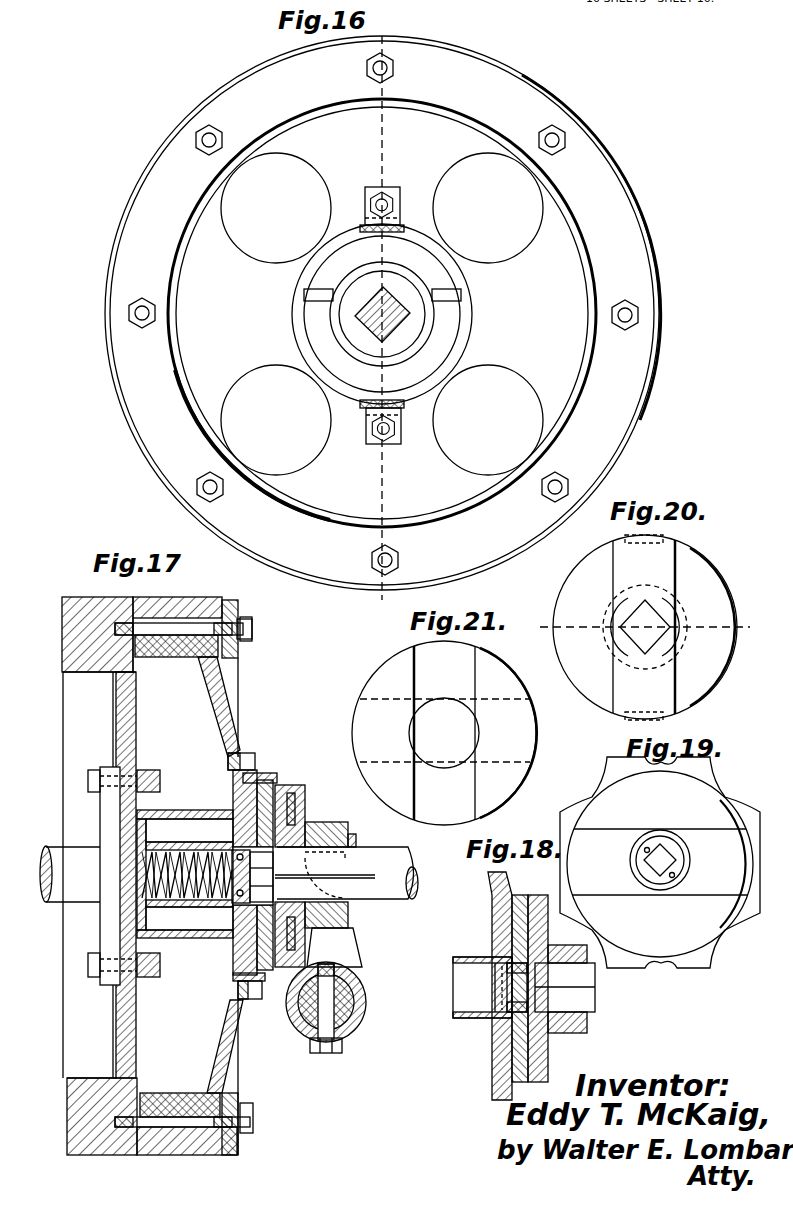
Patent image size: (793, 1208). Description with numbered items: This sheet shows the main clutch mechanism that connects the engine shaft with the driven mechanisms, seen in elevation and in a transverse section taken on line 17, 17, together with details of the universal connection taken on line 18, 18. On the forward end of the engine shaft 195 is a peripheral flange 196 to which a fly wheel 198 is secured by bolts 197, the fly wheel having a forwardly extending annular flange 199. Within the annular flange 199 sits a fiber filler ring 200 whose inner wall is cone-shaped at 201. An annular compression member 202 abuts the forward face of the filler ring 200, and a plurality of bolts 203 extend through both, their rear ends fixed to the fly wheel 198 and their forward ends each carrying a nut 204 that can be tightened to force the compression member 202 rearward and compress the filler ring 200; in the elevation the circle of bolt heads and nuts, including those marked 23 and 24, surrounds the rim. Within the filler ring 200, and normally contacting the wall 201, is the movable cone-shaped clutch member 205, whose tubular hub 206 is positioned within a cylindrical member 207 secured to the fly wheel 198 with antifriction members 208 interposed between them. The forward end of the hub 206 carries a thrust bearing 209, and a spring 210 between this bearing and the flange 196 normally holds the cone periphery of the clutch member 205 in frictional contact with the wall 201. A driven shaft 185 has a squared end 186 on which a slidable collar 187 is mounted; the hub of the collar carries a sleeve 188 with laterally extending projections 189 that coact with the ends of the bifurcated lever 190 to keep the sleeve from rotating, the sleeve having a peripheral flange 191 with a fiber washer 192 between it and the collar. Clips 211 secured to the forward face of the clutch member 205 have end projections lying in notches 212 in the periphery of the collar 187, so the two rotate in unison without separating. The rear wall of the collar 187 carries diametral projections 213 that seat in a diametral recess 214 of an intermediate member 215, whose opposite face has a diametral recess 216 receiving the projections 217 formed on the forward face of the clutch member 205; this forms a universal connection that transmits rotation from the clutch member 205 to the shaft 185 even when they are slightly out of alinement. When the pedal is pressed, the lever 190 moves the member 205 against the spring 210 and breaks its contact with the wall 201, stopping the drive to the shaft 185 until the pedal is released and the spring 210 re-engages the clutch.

In FIG. 16, the section line 17- 17 is at (377, 316).
In FIG. 20, the section line 18- 18 is at (646, 635).
In FIG. 16, the bolt 23 is at (555, 137).
In FIG. 16, the nut 24 is at (567, 139).
In FIG. 17, the shaft 185 is at (386, 882).
In FIG. 20, the shaft 185 is at (655, 633).
In FIG. 16, the squared end 186 is at (357, 322).
In FIG. 17, the squared end 186 is at (362, 856).
In FIG. 18, the squared end 186 is at (585, 1005).
In FIG. 16, the slidable collar 187 is at (283, 345).
In FIG. 17, the slidable collar 187 is at (310, 806).
In FIG. 20, the slidable collar 187 is at (720, 596).
In FIG. 18, the slidable collar 187 is at (552, 930).
In FIG. 16, the sleeve 188 is at (384, 363).
In FIG. 17, the sleeve 188 is at (312, 822).
In FIG. 16, the laterally extending projections 189 is at (318, 289).
In FIG. 17, the laterally extending projections 189 is at (352, 836).
In FIG. 18, the laterally extending projections 189 is at (570, 1032).
In FIG. 17, the bifurcated lever 190 is at (358, 952).
In FIG. 17, the peripheral flange 191 is at (292, 800).
In FIG. 17, the fiber washer 192 is at (282, 790).
In FIG. 17, the engine shaft 195 is at (60, 848).
In FIG. 17, the peripheral flange 196 is at (100, 800).
In FIG. 17, the bolts 197 is at (88, 778).
In FIG. 17, the fly wheel 198 is at (67, 1105).
In FIG. 16, the annular flange 199 is at (182, 141).
In FIG. 17, the annular flange 199 is at (196, 606).
In FIG. 17, the filler ring 200 is at (190, 1138).
In FIG. 17, the cone-shaped inner wall 201 is at (160, 628).
In FIG. 16, the annular compression member 202 is at (634, 283).
In FIG. 17, the annular compression member 202 is at (228, 648).
In FIG. 16, the bolts 203 is at (136, 317).
In FIG. 17, the bolts 203 is at (252, 632).
In FIG. 16, the nut 204 is at (126, 348).
In FIG. 17, the nut 204 is at (244, 619).
In FIG. 16, the movable cone-shaped clutch member 205 is at (555, 262).
In FIG. 17, the movable cone-shaped clutch member 205 is at (202, 656).
In FIG. 19, the movable cone-shaped clutch member 205 is at (613, 798).
In FIG. 18, the movable cone-shaped clutch member 205 is at (492, 908).
In FIG. 17, the tubular hub 206 is at (170, 840).
In FIG. 19, the tubular hub 206 is at (690, 853).
In FIG. 18, the tubular hub 206 is at (462, 957).
In FIG. 17, the cylindrical member 207 is at (163, 810).
In FIG. 17, the antifriction members 208 is at (213, 838).
In FIG. 17, the thrust bearing 209 is at (262, 880).
In FIG. 19, the thrust bearing 209 is at (664, 846).
In FIG. 18, the thrust bearing 209 is at (500, 1015).
In FIG. 17, the spring 210 is at (186, 905).
In FIG. 16, the clips 211 is at (380, 188).
In FIG. 17, the clips 211 is at (241, 752).
In FIG. 16, the notches 212 is at (399, 226).
In FIG. 17, the notches 212 is at (268, 775).
In FIG. 20, the notches 212 is at (625, 538).
In FIG. 20, the diametral projections 213 is at (653, 572).
In FIG. 21, the diametral recess 214 is at (462, 678).
In FIG. 17, the intermediate member 215 is at (255, 772).
In FIG. 21, the intermediate member 215 is at (386, 672).
In FIG. 18, the intermediate member 215 is at (538, 905).
In FIG. 21, the diametral recess 216 is at (510, 705).
In FIG. 19, the projections 217 is at (700, 886).
In FIG. 18, the projections 217 is at (518, 896).